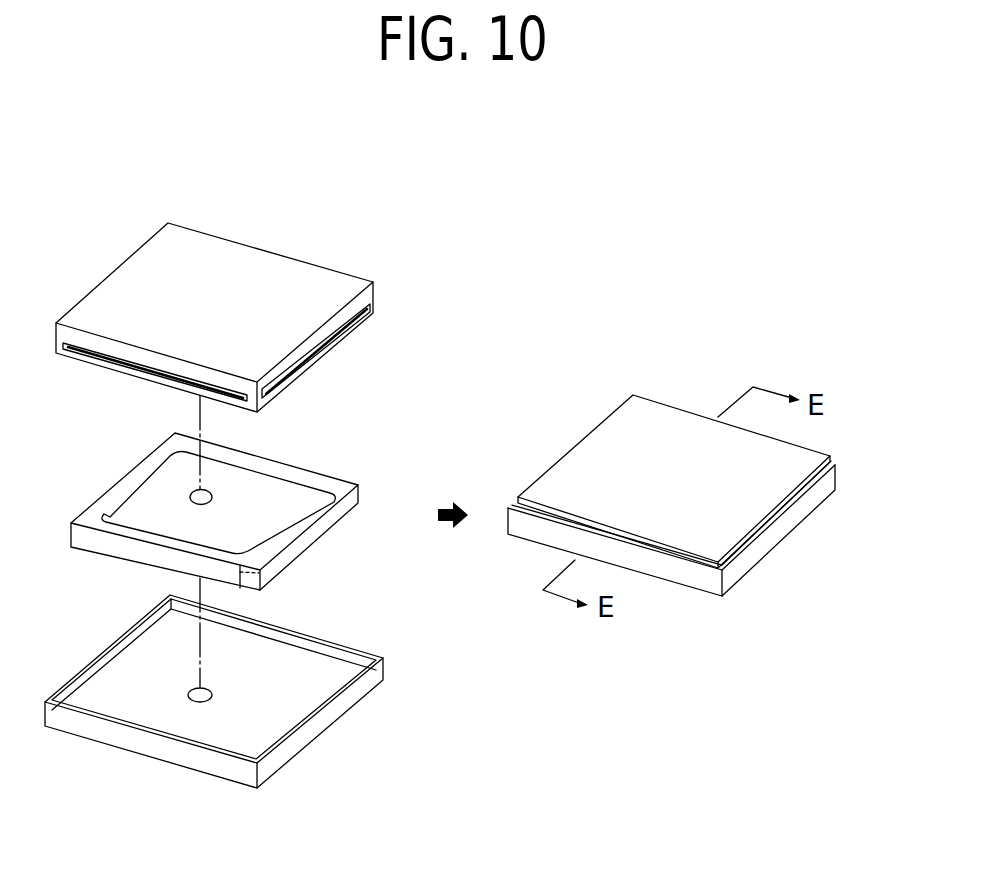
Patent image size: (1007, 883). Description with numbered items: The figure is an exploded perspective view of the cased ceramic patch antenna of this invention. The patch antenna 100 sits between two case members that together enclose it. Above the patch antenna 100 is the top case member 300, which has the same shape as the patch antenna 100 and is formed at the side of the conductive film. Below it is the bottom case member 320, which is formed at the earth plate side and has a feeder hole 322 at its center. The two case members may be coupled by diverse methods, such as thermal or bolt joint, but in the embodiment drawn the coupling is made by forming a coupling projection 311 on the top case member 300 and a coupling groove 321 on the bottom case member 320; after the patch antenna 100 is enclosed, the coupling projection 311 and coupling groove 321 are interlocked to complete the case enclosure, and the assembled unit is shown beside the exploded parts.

The patch antenna 100 is at (261, 493).
The upper cover 300 is at (260, 278).
The coupling projection 311 is at (343, 320).
The bottom case member 320 is at (365, 678).
The coupling groove 321 is at (323, 637).
The feeder hole 322 is at (190, 687).